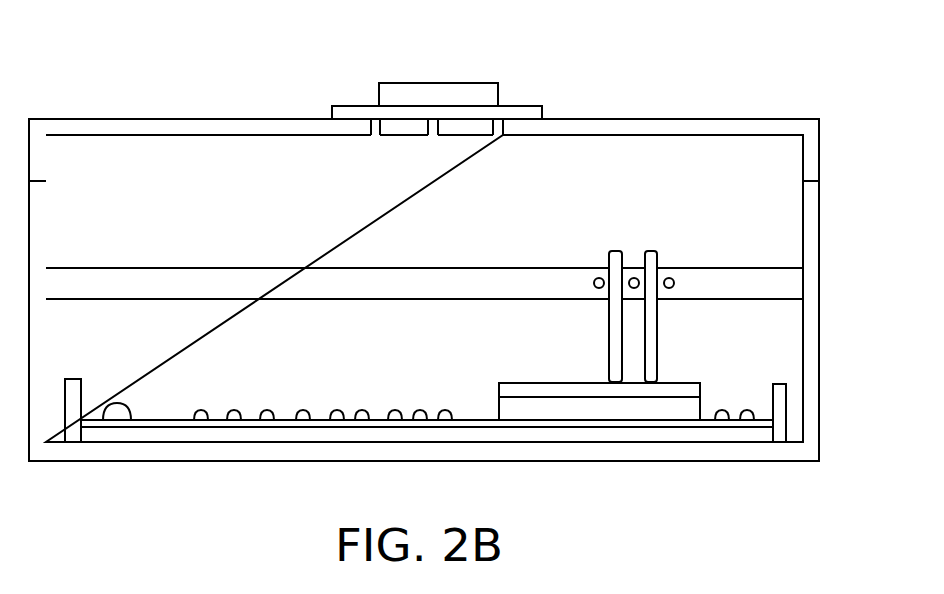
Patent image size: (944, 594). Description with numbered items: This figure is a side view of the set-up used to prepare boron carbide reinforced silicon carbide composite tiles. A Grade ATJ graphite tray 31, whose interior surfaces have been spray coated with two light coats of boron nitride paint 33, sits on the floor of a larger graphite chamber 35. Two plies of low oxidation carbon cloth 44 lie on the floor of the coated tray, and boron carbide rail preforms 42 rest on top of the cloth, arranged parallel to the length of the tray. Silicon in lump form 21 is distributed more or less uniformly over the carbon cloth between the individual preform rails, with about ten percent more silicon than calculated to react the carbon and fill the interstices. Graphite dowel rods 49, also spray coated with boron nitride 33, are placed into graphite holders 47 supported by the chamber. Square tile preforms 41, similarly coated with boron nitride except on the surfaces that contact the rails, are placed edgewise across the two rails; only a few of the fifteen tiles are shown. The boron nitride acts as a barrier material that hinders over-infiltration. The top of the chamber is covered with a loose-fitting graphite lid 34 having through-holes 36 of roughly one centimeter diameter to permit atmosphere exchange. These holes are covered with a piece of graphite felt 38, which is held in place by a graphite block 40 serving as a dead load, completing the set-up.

The silicon in lump form 21 is at (200, 410).
The graphite tray 31 is at (76, 433).
The boron nitride paint 33 is at (646, 240).
The graphite lid 34 is at (49, 128).
The graphite chamber 35 is at (813, 442).
The through-holes 36 is at (377, 131).
The graphite felt 38 is at (342, 110).
The graphite block 40 is at (403, 92).
The tile preforms 41 is at (615, 260).
The boron carbide rail preforms 42 is at (509, 407).
The carbon cloth 44 is at (130, 405).
The graphite holders 47 is at (68, 283).
The graphite dowel rods 49 is at (672, 277).